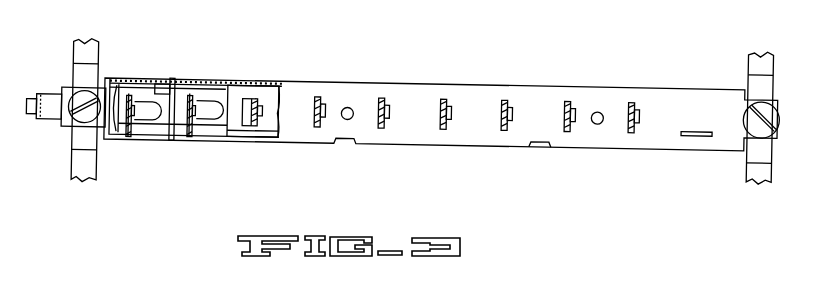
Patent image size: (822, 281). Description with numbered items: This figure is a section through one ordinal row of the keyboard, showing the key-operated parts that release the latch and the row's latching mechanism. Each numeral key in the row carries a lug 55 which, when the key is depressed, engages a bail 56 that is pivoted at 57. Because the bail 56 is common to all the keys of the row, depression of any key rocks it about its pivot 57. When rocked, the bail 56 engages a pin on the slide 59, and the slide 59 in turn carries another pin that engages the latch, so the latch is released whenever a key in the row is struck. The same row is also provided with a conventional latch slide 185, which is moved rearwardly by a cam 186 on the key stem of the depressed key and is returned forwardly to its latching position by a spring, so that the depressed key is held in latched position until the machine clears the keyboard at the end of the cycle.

The lug 55 is at (129, 136).
The bail 56 is at (218, 130).
The pivot 57 is at (176, 84).
The slide 59 is at (693, 125).
The latch slide 185 is at (52, 116).
The cam 186 is at (254, 88).